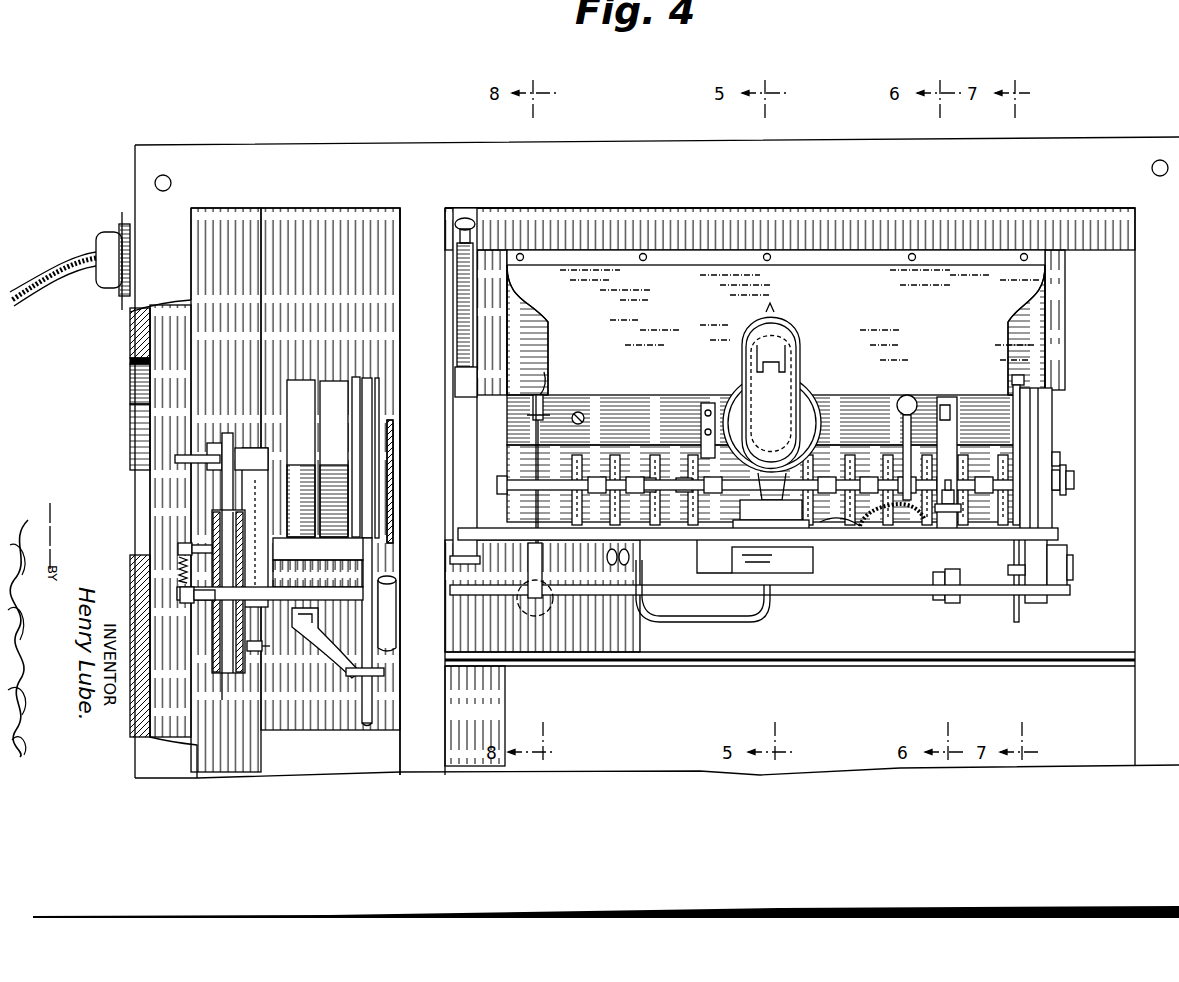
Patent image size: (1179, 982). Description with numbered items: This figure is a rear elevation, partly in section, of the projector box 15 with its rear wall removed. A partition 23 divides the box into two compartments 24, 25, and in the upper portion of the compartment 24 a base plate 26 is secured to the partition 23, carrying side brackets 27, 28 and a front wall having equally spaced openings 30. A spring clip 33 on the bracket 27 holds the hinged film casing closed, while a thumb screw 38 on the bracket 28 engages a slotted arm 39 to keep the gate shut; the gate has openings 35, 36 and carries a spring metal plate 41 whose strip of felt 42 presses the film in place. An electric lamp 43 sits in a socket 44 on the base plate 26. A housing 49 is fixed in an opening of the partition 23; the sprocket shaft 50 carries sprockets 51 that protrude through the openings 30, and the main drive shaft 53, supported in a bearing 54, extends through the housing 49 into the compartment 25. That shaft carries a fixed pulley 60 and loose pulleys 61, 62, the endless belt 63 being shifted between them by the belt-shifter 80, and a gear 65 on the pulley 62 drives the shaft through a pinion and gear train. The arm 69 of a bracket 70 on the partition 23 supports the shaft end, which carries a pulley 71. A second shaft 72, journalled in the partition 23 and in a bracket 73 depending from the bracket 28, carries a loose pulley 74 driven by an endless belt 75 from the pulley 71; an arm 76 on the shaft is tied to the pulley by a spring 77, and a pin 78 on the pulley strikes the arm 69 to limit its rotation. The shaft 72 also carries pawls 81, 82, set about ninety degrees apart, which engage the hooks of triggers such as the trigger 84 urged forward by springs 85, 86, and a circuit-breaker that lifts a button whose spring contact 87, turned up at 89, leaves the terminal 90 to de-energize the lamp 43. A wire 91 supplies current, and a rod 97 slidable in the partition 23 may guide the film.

The box 15 is at (790, 183).
The partition 23 is at (411, 491).
The compartment 24 is at (932, 215).
The compartment 25 is at (345, 228).
The base plate 26 is at (886, 540).
The side bracket 27 is at (492, 482).
The side bracket 28 is at (1052, 425).
The openings 30 is at (578, 458).
The spring clip 33 is at (458, 297).
The opening 35 is at (1022, 380).
The opening 36 is at (532, 397).
The thumb screw 38 is at (1074, 481).
The slotted arm 39 is at (1060, 462).
The spring metal plate 41 is at (776, 322).
The strip of felt 42 is at (800, 315).
The electric lamp 43 is at (772, 416).
The socket 44 is at (755, 556).
The housing 49 is at (382, 382).
The sprocket shaft 50 is at (866, 500).
The sprockets 51 is at (660, 468).
The main drive shaft 53 is at (615, 458).
The bearing 54 is at (708, 403).
The pulley 60 is at (301, 458).
The pulley 61 is at (334, 459).
The pulley 62 is at (372, 386).
The endless belt 63 is at (375, 548).
The gear 65 is at (394, 430).
The arm 69 is at (262, 480).
The bracket 70 is at (320, 555).
The pulley 71 is at (234, 432).
The shaft 72 is at (855, 596).
The bracket 73 is at (1055, 553).
The pulley 74 is at (240, 672).
The endless belt 75 is at (230, 492).
The arm 76 is at (195, 664).
The spring 77 is at (176, 570).
The pin 78 is at (270, 647).
The belt-shifter 80 is at (345, 677).
The pawl 81 is at (1010, 590).
The pawl 82 is at (540, 615).
The trigger 84 is at (540, 393).
The spring 85 is at (950, 572).
The spring 86 is at (553, 418).
The spring contact 87 is at (960, 500).
The turned-up portion of contact 89 is at (950, 455).
The terminal 90 is at (920, 410).
The wire 91 is at (95, 258).
The rod 97 is at (683, 660).